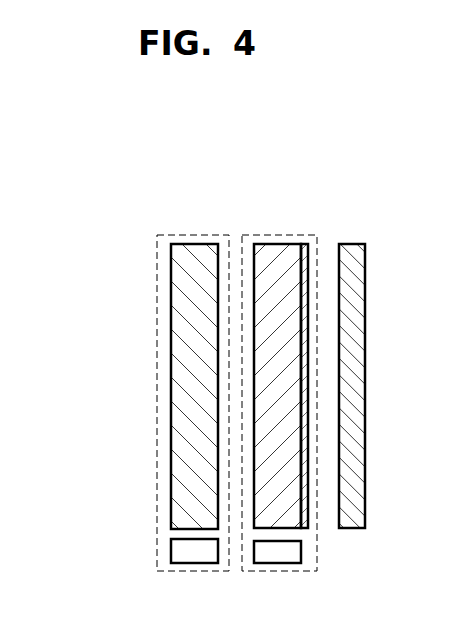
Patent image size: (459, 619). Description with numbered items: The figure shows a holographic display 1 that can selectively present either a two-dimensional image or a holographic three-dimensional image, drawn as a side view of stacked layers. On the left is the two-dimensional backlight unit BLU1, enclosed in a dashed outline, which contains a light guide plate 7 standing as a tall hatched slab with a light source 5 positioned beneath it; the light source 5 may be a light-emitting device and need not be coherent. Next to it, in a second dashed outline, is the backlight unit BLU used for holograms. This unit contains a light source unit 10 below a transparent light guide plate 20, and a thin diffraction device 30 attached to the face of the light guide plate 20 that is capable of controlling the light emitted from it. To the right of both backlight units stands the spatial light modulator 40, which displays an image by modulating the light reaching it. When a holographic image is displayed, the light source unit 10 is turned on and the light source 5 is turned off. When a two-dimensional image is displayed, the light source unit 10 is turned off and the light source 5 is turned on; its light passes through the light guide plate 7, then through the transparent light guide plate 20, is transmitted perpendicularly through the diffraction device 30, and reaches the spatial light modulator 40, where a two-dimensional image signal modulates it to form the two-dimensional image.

The holographic display 1 is at (80, 217).
The light source 5 is at (195, 560).
The light guide plate 7 is at (193, 250).
The light source unit 10 is at (277, 558).
The light guide plate 20 is at (273, 250).
The diffraction device 30 is at (307, 245).
The spatial light modulator 40 is at (353, 250).
The 2D backlight unit BLU1 is at (157, 553).
The backlight unit BLU is at (317, 549).